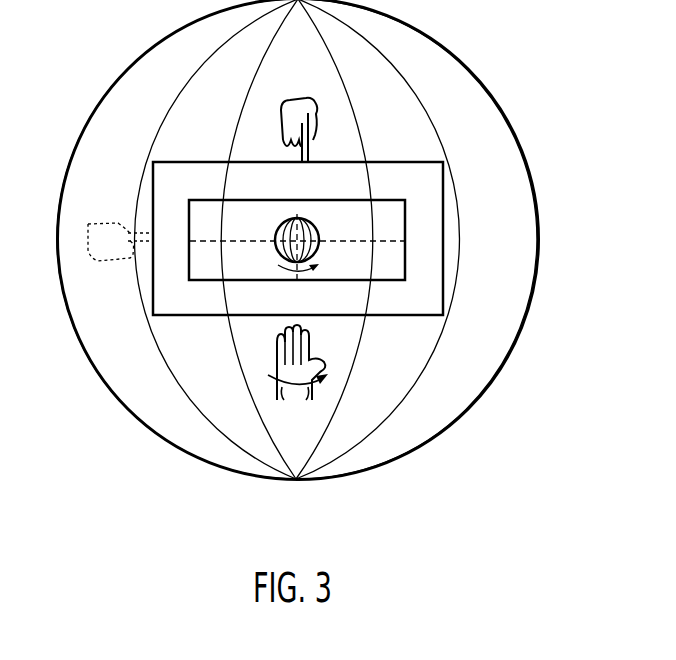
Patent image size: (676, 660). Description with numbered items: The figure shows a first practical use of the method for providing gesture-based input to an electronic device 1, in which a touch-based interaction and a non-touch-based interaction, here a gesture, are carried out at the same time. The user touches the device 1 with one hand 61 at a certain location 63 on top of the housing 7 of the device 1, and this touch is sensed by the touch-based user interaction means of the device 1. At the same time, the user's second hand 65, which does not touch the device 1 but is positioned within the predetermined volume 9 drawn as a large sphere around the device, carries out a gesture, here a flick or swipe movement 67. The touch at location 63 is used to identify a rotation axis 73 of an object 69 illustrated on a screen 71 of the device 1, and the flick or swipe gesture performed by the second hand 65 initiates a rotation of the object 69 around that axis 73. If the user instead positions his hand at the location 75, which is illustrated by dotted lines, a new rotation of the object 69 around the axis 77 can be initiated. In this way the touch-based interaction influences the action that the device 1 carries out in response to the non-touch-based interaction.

The electronic device 1 is at (325, 220).
The housing 7 is at (186, 162).
The predetermined volume 9 is at (398, 456).
The hand 61 is at (206, 179).
The location 63 is at (311, 158).
The second hand 65 is at (298, 376).
The flick or swipe movement 67 is at (269, 376).
The object 69 is at (277, 251).
The screen 71 is at (390, 204).
The rotation axis 73 is at (295, 204).
The location 75 is at (152, 232).
The axis 77 is at (201, 243).